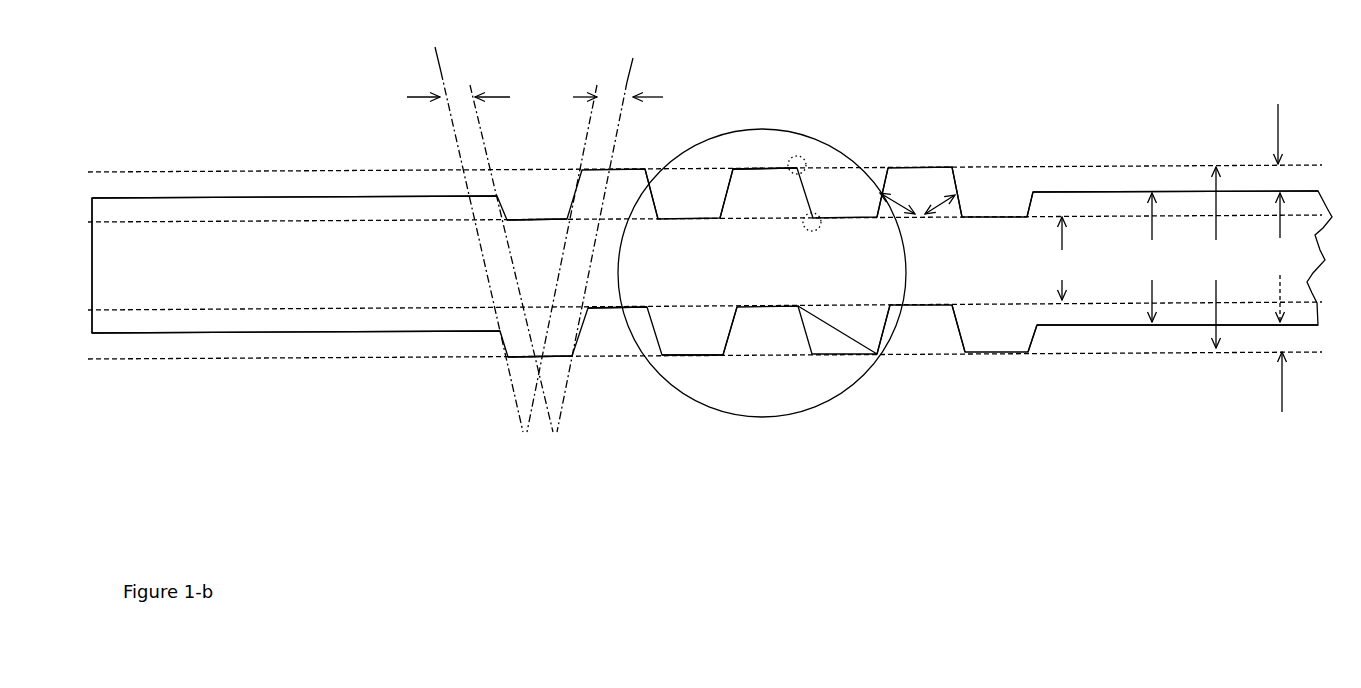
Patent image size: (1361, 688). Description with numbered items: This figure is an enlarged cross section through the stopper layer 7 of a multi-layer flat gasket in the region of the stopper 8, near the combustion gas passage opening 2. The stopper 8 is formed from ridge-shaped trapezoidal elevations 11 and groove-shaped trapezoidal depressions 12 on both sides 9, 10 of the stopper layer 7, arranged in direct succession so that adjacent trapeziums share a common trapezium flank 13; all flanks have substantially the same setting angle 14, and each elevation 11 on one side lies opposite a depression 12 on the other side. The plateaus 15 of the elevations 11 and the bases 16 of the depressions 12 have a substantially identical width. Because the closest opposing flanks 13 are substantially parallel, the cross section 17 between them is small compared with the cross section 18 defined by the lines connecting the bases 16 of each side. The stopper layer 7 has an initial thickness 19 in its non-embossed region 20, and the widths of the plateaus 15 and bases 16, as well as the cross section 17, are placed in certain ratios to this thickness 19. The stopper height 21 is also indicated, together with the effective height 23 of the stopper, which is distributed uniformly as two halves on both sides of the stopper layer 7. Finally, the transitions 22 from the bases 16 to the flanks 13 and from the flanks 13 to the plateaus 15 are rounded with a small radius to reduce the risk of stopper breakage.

The combustion gas passage opening 2 is at (679, 273).
The stopper layer 7 is at (182, 272).
The stopper 8 is at (678, 293).
The side of the stopper layer 9 is at (388, 333).
The side of the stopper layer 10 is at (332, 197).
The trapezoidal elevation 11 is at (742, 182).
The trapezoidal depression 12 is at (703, 207).
The trapezium flank 13 is at (885, 340).
The setting angle 14 is at (925, 210).
The plateau of the trapezoidal elevation 15 is at (767, 169).
The base of the trapezoidal depression 16 is at (538, 220).
The cross section Q1 17 is at (535, 229).
The cross section Q2 18 is at (1060, 250).
The thickness Q3 of the stopper layer 19 is at (1138, 265).
The non-embossed region of the stopper layer 20 is at (245, 333).
The stopper height Q4 21 is at (1203, 263).
The transition 22 is at (817, 222).
The effective height Q5 of the stopper 23 is at (1282, 262).